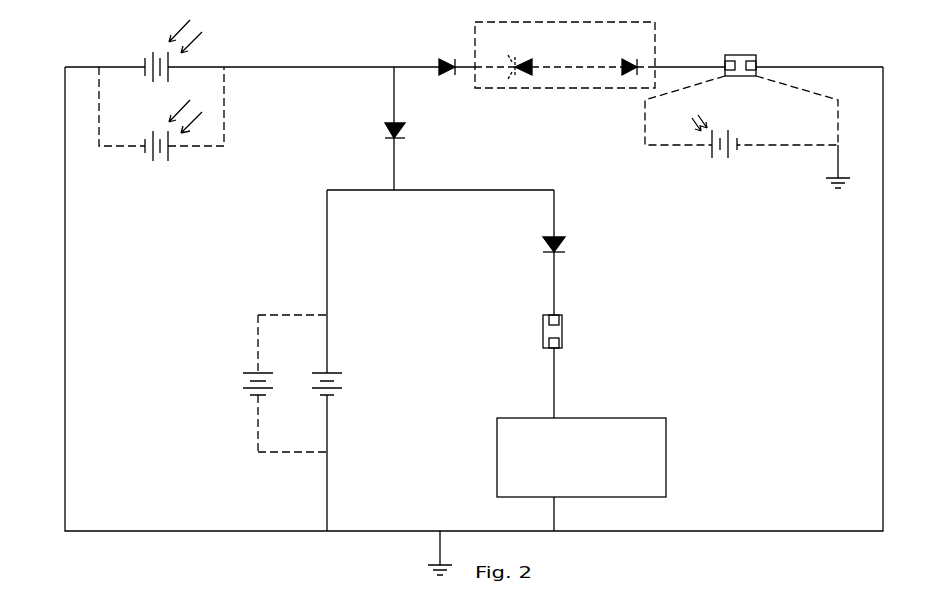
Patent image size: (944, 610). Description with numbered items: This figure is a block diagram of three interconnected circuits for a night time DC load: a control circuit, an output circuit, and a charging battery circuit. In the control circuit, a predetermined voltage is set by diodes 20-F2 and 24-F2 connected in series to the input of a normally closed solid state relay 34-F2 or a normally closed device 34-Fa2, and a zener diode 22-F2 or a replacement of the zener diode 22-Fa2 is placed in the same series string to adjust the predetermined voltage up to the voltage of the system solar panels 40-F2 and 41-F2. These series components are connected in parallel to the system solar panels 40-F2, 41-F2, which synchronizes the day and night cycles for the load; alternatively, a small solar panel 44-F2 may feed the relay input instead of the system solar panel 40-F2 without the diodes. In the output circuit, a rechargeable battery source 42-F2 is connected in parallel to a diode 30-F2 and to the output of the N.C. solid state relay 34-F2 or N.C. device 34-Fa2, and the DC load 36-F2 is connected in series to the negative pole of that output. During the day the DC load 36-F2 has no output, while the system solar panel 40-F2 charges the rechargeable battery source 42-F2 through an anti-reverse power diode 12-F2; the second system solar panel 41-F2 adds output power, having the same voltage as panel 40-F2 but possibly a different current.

The anti-reverse power diode 12-F2 is at (371, 132).
The diode 20-F2 is at (452, 54).
The zener diode 22-F2 is at (565, 55).
The replacement of the zener diode 22-Fa2 is at (565, 55).
The diode 24-F2 is at (632, 54).
The diode 30-F2 is at (580, 246).
The normally closed solid state relay 34-F2 is at (705, 188).
The normally closed device 34-Fa2 is at (705, 188).
The DC load 36-F2 is at (603, 457).
The system solar panel 40-F2 is at (117, 51).
The system solar panel 41-F2 is at (174, 122).
The rechargeable battery source 42-F2 is at (317, 383).
The small solar panel 44-F2 is at (747, 132).